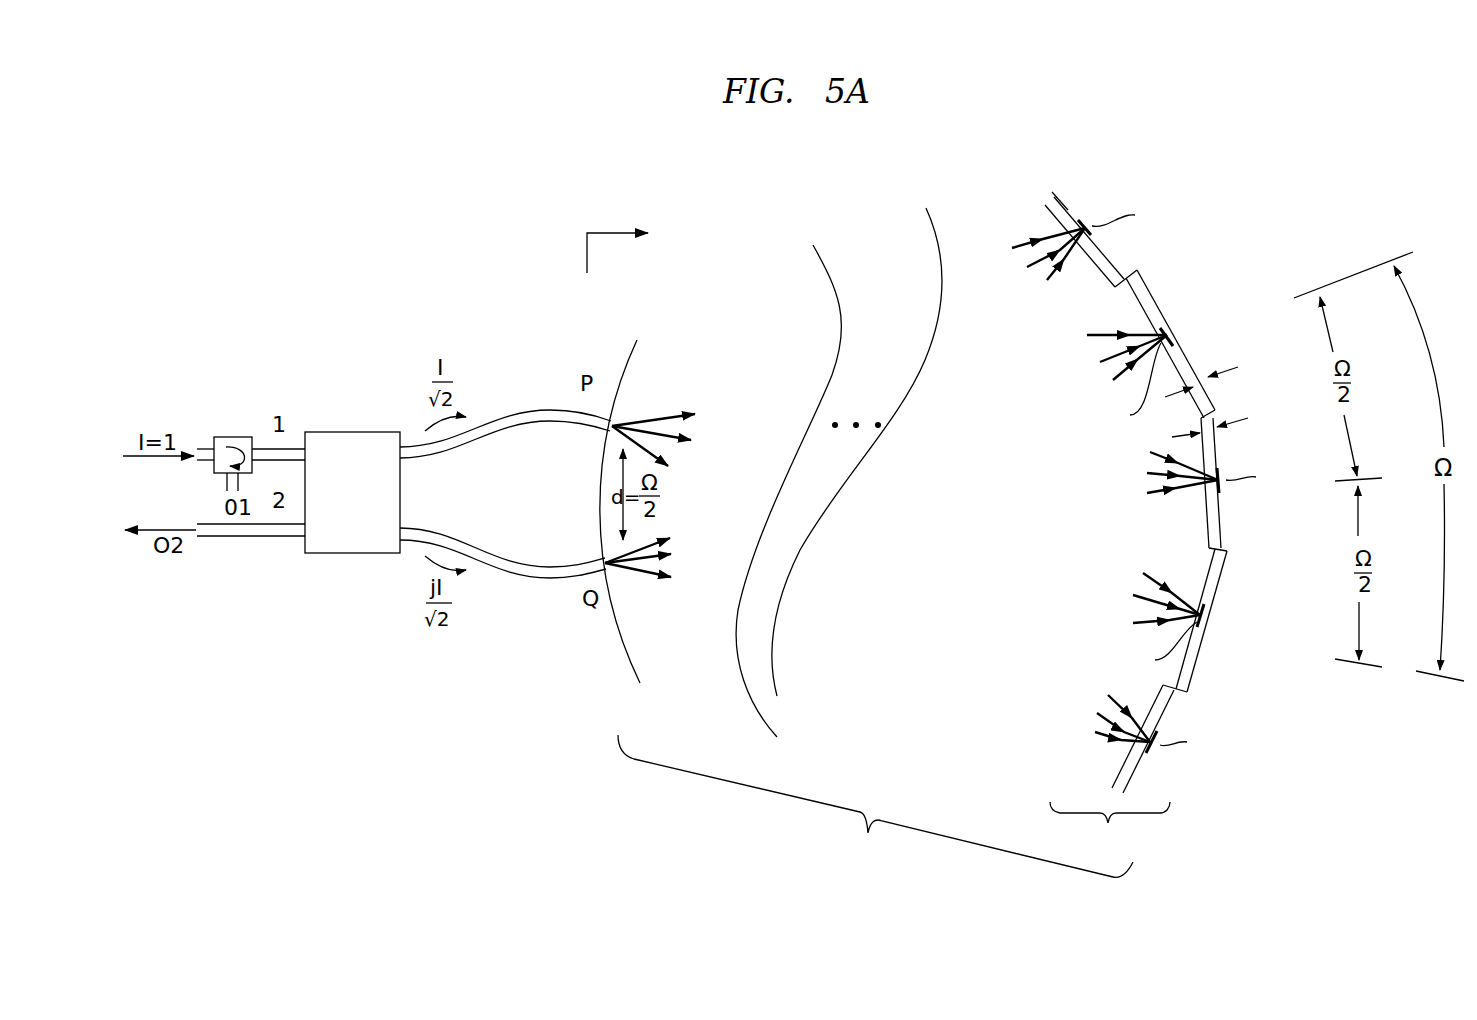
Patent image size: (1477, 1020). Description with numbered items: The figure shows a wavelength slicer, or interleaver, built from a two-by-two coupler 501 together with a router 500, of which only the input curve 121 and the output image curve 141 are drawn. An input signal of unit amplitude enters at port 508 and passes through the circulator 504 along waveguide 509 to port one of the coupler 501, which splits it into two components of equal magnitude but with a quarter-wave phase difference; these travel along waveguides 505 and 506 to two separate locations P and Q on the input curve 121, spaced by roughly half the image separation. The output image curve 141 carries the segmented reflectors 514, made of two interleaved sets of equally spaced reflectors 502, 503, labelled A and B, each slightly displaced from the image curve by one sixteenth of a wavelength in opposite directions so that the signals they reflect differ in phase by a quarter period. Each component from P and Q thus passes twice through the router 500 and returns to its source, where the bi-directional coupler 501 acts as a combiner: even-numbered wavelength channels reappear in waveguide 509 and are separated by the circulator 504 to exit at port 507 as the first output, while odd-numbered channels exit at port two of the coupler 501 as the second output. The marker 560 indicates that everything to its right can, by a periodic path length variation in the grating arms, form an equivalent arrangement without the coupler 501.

The input curve 121 is at (632, 668).
The output image curve 141 is at (1065, 200).
The router 500 is at (875, 542).
The 2×2 coupler 501 is at (352, 554).
The reflector 502 is at (1102, 284).
The reflector 503 is at (1168, 307).
The circulator 504 is at (233, 437).
The waveguide 505 is at (517, 428).
The waveguide 506 is at (532, 579).
The port 507 is at (240, 481).
The port 508 is at (208, 462).
The waveguide 509 is at (296, 455).
The segmented reflectors 514 is at (1162, 515).
The boundary 560 is at (617, 237).